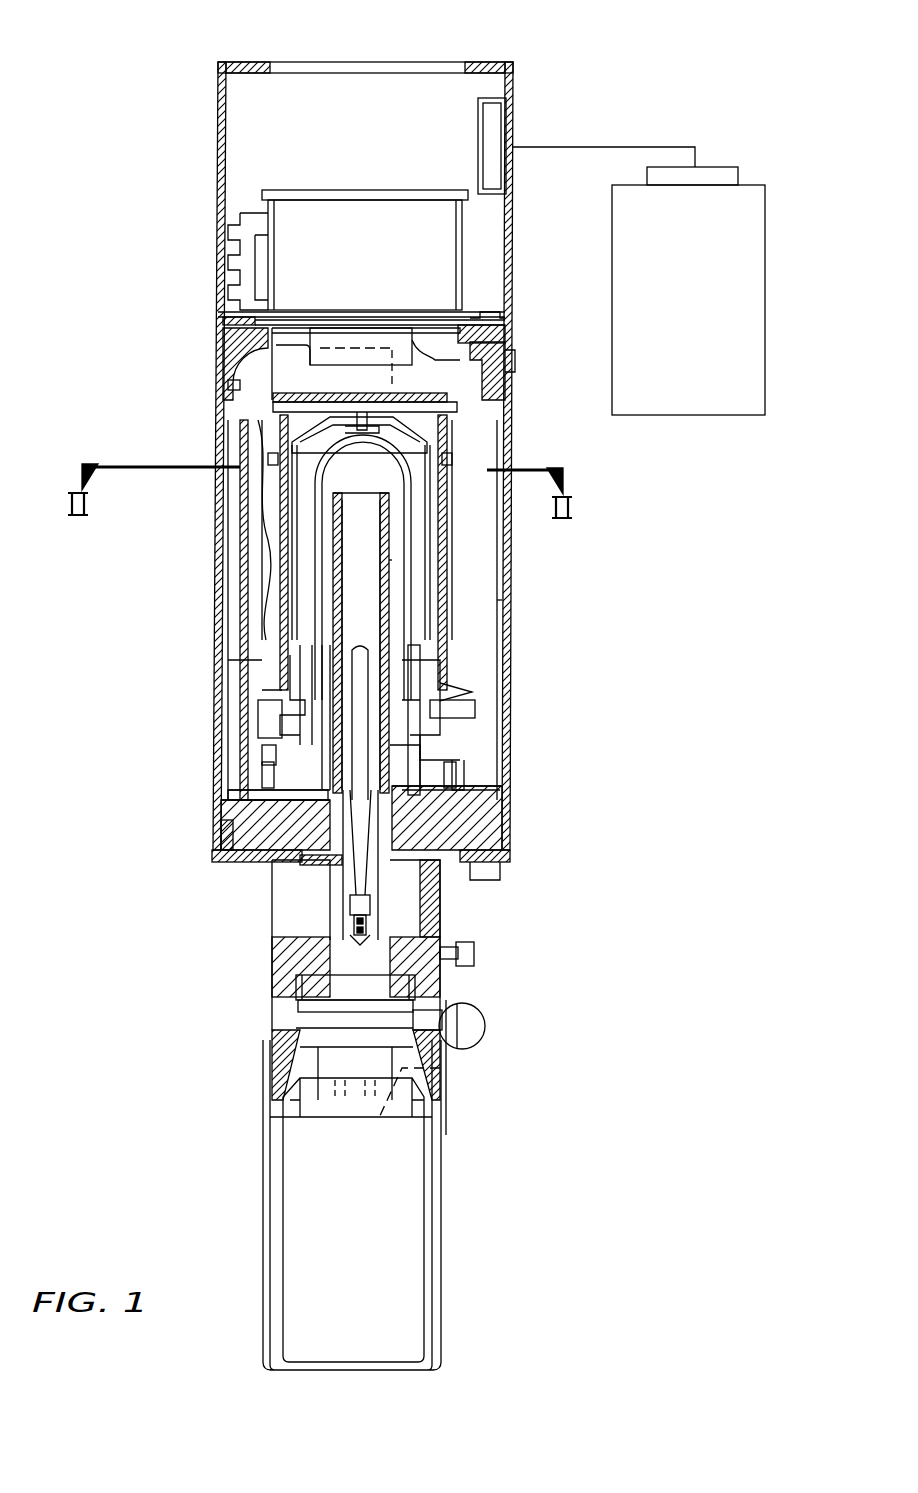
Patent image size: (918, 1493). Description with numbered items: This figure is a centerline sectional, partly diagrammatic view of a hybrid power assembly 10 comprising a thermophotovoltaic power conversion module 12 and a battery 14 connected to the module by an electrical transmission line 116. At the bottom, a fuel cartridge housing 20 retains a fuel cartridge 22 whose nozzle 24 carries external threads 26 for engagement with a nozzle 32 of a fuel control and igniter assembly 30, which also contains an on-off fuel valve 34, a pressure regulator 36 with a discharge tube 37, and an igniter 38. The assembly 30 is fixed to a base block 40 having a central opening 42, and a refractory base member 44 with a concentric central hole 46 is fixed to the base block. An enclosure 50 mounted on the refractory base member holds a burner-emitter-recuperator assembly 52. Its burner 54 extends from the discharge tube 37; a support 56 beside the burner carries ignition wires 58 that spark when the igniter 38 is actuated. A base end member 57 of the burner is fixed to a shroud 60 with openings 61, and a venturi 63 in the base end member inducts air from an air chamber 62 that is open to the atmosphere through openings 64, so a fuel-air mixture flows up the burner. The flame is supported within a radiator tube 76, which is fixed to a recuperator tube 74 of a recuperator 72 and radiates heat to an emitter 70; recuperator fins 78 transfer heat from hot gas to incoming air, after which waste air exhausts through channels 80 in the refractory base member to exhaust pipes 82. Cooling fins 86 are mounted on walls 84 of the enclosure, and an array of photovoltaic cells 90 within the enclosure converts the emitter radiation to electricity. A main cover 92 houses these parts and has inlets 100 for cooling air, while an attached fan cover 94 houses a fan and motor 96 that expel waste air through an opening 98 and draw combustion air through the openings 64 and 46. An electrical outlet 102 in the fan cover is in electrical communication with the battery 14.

The hybrid power assembly 10 is at (644, 82).
The thermophotovoltaic power conversion module 12 is at (608, 742).
The battery 14 is at (656, 405).
The fuel cartridge housing 20 is at (441, 1218).
The fuel cartridge 22 is at (405, 1293).
The nozzle 24 is at (450, 1068).
The external threads 26 is at (360, 1085).
The fuel control and igniter assembly 30 is at (300, 970).
The nozzle 32 is at (290, 1100).
The on-off fuel valve 34 is at (485, 1026).
The pressure regulator 36 is at (305, 1012).
The discharge tube 37 is at (310, 990).
The igniter 38 is at (474, 958).
The base block 40 is at (225, 852).
The central opening 42 is at (250, 862).
The refractory base member 44 is at (222, 826).
The central hole 46 is at (320, 880).
The enclosure 50 is at (238, 390).
The burner-emitter-recuperator assembly 52 is at (470, 702).
The burner 54 is at (470, 756).
The support 56 is at (492, 800).
The base end member 57 is at (400, 870).
The ignition wires 58 is at (470, 652).
The shroud 60 is at (372, 914).
The openings 61 is at (368, 938).
The air chamber 62 is at (300, 919).
The venturi 63 is at (372, 896).
The openings 64 is at (258, 906).
The emitter 70 is at (404, 522).
The recuperator 72 is at (335, 698).
The recuperator tube 74 is at (478, 672).
The radiator tube 76 is at (392, 595).
The recuperator fins 78 is at (480, 738).
The channels 80 is at (255, 795).
The exhaust pipes 82 is at (215, 690).
The walls 84 is at (392, 556).
The cooling fins 86 is at (480, 462).
The photovoltaic cells 90 is at (295, 490).
The main cover 92 is at (240, 522).
The fan cover 94 is at (217, 128).
The fan and motor 96 is at (326, 259).
The opening 98 is at (283, 62).
The inlets 100 is at (500, 770).
The electrical outlet 102 is at (500, 115).
The electrical transmission line 116 is at (624, 131).